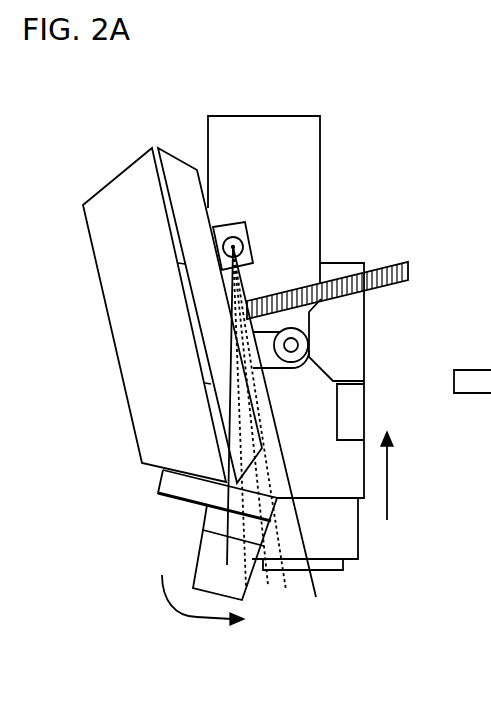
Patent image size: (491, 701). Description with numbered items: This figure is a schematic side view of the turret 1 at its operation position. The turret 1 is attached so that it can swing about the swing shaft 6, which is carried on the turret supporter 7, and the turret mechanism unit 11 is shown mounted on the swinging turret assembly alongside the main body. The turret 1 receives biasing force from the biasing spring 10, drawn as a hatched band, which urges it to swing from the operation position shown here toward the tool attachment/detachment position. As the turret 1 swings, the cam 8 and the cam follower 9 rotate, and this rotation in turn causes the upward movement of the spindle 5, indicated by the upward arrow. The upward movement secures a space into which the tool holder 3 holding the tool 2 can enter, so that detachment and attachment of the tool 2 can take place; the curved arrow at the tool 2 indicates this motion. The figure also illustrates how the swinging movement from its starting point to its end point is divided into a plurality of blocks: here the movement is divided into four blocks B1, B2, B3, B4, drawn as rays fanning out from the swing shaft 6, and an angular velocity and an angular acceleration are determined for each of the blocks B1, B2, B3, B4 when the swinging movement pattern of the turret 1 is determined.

The turret 1 is at (152, 305).
The tool 2 is at (233, 573).
The tool holder 3 is at (205, 497).
The spindle 5 is at (308, 530).
The swing shaft 6 is at (233, 247).
The turret supporter 7 is at (263, 160).
The cam 8 is at (352, 373).
The cam follower 9 is at (291, 345).
The biasing spring 10 is at (385, 283).
The turret mechanism unit 11 is at (192, 343).
The block B1 is at (236, 424).
The block B2 is at (255, 427).
The block B3 is at (267, 434).
The block B4 is at (280, 438).